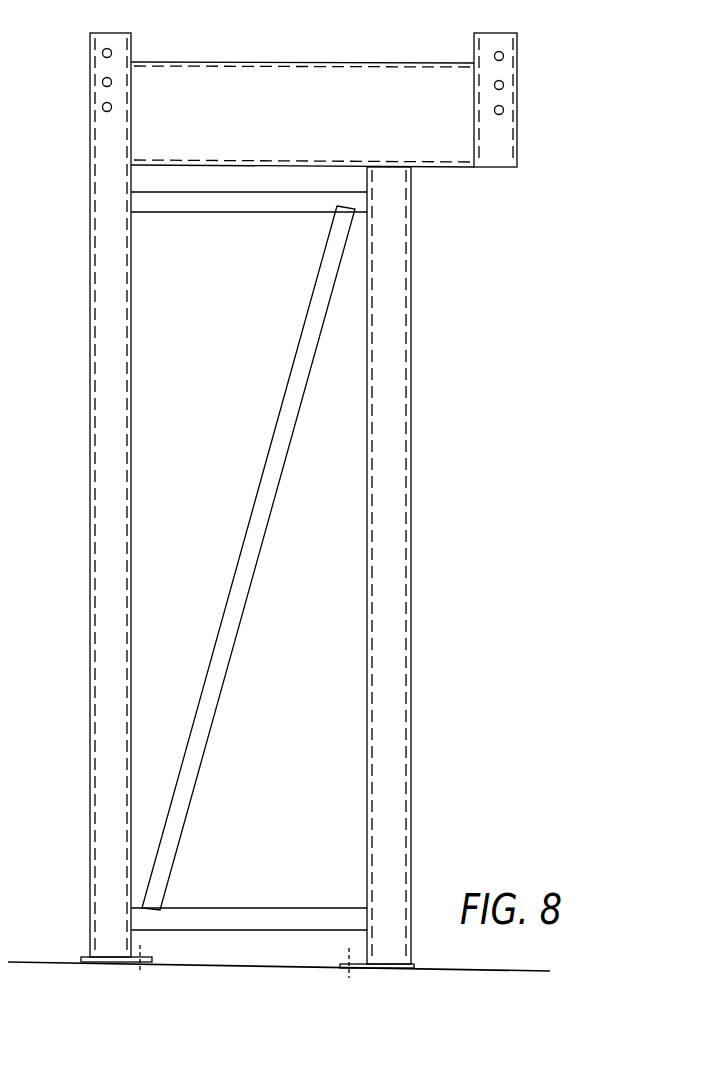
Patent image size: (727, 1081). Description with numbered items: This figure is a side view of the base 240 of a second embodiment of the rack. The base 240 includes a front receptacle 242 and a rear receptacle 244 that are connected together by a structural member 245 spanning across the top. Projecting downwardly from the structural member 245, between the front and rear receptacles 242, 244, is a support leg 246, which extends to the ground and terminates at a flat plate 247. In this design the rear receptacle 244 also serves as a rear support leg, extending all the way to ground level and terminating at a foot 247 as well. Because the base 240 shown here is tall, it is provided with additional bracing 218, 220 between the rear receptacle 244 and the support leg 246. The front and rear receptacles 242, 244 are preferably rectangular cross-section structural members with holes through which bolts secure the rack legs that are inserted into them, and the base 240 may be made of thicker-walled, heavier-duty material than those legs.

The base 240 is at (510, 268).
The front receptacle 242 is at (507, 42).
The rear receptacle 244 is at (90, 146).
The structural member 245 is at (290, 62).
The support leg 246 is at (398, 498).
The flat plate 247 is at (110, 957).
The bracing 218 is at (236, 205).
The bracing 220 is at (280, 423).